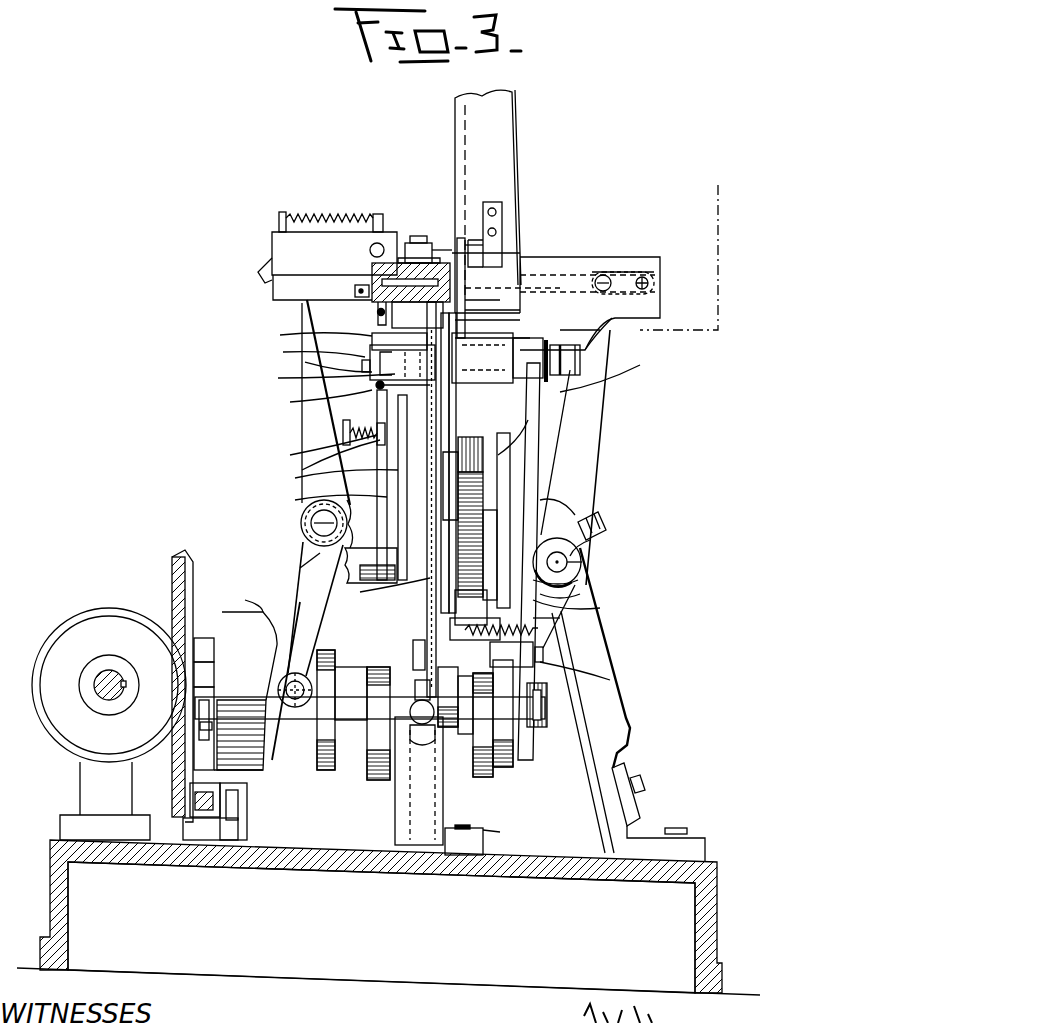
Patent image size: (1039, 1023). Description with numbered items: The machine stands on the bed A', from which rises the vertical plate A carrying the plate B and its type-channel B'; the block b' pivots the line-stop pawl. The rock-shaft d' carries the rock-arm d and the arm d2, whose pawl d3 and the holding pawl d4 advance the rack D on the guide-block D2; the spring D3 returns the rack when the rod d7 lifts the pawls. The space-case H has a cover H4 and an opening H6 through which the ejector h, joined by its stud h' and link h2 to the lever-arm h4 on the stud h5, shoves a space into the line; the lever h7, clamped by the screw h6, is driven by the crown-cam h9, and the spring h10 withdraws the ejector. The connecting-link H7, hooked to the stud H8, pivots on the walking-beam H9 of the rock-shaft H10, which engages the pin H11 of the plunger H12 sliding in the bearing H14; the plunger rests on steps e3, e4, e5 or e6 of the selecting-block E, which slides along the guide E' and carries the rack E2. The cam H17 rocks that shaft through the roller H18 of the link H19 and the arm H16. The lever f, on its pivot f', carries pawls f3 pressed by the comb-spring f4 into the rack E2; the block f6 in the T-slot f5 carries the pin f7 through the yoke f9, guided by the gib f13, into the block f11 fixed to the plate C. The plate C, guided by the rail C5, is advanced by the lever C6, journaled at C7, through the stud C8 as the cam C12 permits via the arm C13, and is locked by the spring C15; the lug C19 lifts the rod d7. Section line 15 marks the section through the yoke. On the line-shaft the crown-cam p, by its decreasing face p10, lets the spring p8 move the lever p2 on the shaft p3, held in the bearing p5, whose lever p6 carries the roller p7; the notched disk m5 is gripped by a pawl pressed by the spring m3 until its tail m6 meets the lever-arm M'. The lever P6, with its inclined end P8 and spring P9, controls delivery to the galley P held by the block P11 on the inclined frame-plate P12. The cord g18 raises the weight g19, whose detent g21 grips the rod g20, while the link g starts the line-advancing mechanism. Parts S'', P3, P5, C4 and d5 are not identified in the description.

The base A' is at (381, 916).
The frame standard A is at (433, 723).
The bearing block M' is at (228, 695).
The shaft support S'' is at (267, 811).
The clutch block m5 is at (208, 638).
The gear m3 is at (213, 728).
The shaft m6 is at (250, 768).
The plate p is at (249, 656).
The plate projection p10 is at (250, 596).
The lever arm p2 is at (360, 402).
The lever g18 is at (315, 609).
The link p7 is at (305, 670).
The roller g is at (290, 708).
The roller p5 is at (305, 533).
The bracket p3 is at (301, 522).
The pin p6 is at (300, 568).
The arm p8 is at (302, 470).
The slide block P3 is at (334, 266).
The spring P9 is at (331, 204).
The stop P8 is at (258, 272).
The pin P5 is at (370, 252).
The cross bar B is at (451, 295).
The screw d' is at (343, 291).
The pivot d2 is at (376, 312).
The block P6 is at (418, 236).
The plate b' is at (417, 231).
The arm d is at (436, 232).
The rod B' is at (448, 261).
The column H is at (488, 201).
The bracket H4 is at (515, 190).
The pin H8 is at (470, 240).
The plate H7 is at (590, 290).
The pin h is at (662, 288).
The pin h' is at (644, 270).
The slot h2 is at (630, 272).
The section line 15 is at (587, 488).
The guide H6 is at (515, 290).
The bar H16 is at (567, 315).
The cam H10 is at (598, 340).
The rod f9 is at (480, 322).
The carrier C is at (425, 499).
The block d5 is at (370, 355).
The arm d3 is at (312, 336).
The arm d4 is at (310, 353).
The pin C15 is at (325, 361).
The slide D is at (324, 376).
The arm D3 is at (317, 400).
The screw D2 is at (378, 386).
The spring f7 is at (370, 423).
The rod C8 is at (319, 448).
The rod C4 is at (377, 445).
The rod C5 is at (398, 470).
The rod f11 is at (328, 471).
The rod C6 is at (323, 491).
The block C7 is at (369, 567).
The arm C13 is at (384, 589).
The bracket E' is at (446, 642).
The rod end d7 is at (413, 652).
The block E is at (471, 607).
The spring f13 is at (495, 639).
The gear f5 is at (486, 470).
The bar H12 is at (497, 480).
The bar H14 is at (510, 440).
The arm H9 is at (540, 400).
The arm H11 is at (540, 465).
The lever f' is at (585, 457).
The lever f4 is at (560, 445).
The arm f3 is at (575, 515).
The block f6 is at (482, 358).
The block f is at (537, 363).
The arm h4 is at (612, 368).
The block e3 is at (590, 518).
The arm h6 is at (606, 530).
The roller e4 is at (557, 592).
The pin h5 is at (582, 562).
The arm e5 is at (578, 580).
The arm e6 is at (580, 594).
The lever E2 is at (600, 608).
The arm h10 is at (560, 622).
The block h7 is at (543, 652).
The arm H18 is at (610, 680).
The lever P is at (605, 658).
The link P12 is at (603, 816).
The block P11 is at (640, 800).
The shaft g19 is at (395, 824).
The gear C19 is at (340, 710).
The gear C12 is at (368, 740).
The bearing g21 is at (422, 750).
The gear g20 is at (450, 690).
The gear H17 is at (500, 723).
The bolt H19 is at (530, 748).
The foot h9 is at (483, 813).